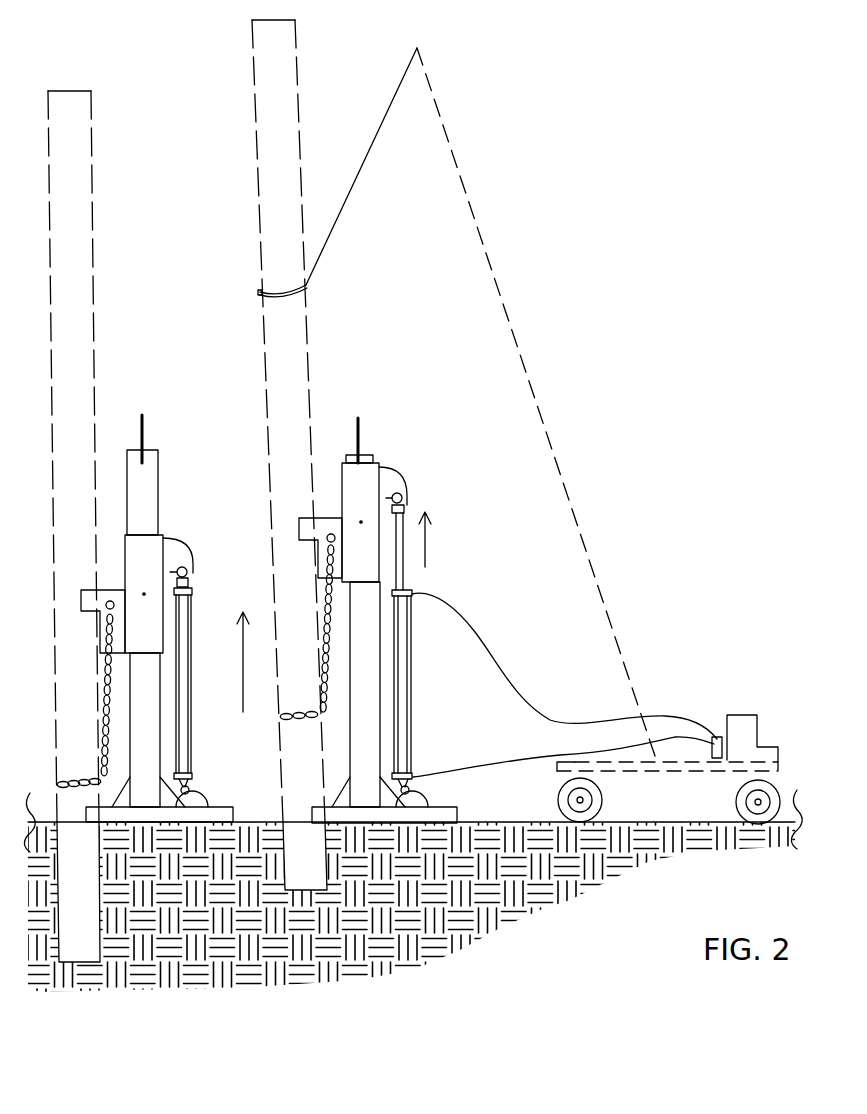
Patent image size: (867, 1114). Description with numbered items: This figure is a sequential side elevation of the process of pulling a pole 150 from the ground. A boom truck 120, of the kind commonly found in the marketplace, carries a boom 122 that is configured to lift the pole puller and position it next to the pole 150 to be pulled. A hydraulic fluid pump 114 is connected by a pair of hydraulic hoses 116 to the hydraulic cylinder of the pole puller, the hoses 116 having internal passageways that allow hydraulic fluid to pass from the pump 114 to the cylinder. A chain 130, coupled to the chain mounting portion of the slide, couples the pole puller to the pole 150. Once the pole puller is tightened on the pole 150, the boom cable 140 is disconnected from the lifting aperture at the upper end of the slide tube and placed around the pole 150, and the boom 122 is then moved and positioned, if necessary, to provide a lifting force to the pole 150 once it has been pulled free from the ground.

The hydraulic fluid pump 114 is at (718, 738).
The hydraulic hoses 116 is at (490, 767).
The boom truck 120 is at (754, 715).
The boom 122 is at (578, 530).
The chain 130 is at (105, 668).
The boom cable 140 is at (377, 134).
The pole 150 is at (250, 296).